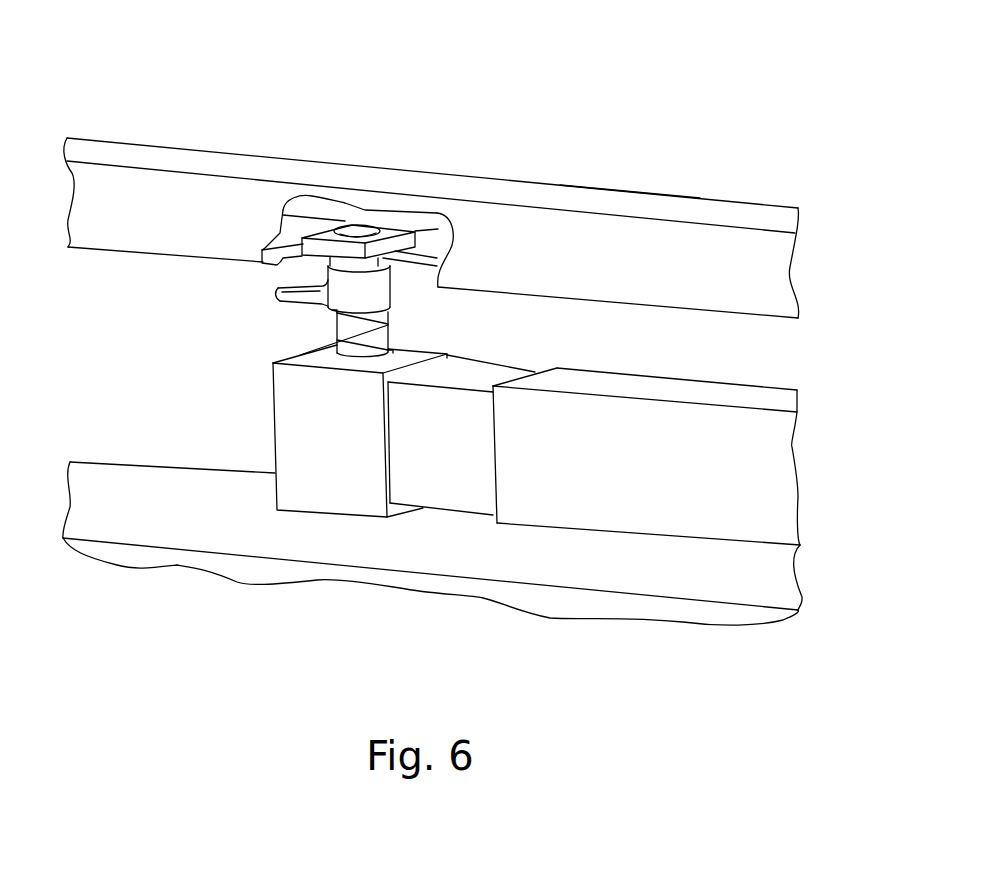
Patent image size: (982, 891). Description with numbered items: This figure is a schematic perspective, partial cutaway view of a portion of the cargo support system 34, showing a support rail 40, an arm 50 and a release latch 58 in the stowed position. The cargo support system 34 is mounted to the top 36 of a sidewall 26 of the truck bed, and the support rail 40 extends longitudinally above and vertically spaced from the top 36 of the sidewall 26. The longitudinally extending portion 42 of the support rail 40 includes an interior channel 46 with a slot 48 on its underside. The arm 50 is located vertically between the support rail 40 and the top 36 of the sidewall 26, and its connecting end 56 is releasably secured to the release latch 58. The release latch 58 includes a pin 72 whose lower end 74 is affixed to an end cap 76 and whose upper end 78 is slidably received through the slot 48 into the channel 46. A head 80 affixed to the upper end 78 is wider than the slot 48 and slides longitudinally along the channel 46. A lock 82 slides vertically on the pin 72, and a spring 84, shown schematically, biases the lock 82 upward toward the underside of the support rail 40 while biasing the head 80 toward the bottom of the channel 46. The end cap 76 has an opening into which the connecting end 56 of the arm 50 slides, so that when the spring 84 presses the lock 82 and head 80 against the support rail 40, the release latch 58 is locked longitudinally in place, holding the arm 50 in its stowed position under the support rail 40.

The sidewall 26 is at (197, 568).
The cargo support system 34 is at (435, 356).
The top of the sidewall 36 is at (120, 511).
The support rail 40 is at (155, 143).
The longitudinally extending portion 42 is at (697, 197).
The interior channel 46 is at (438, 213).
The slot 48 is at (387, 262).
The arm 50 is at (597, 497).
The connecting end 56 is at (432, 512).
The release latch 58 is at (313, 250).
The pin 72 is at (392, 312).
The lower end 74 is at (275, 359).
The end cap 76 is at (273, 473).
The upper end 78 is at (300, 257).
The head 80 is at (312, 225).
The lock 82 is at (283, 300).
The spring 84 is at (337, 340).